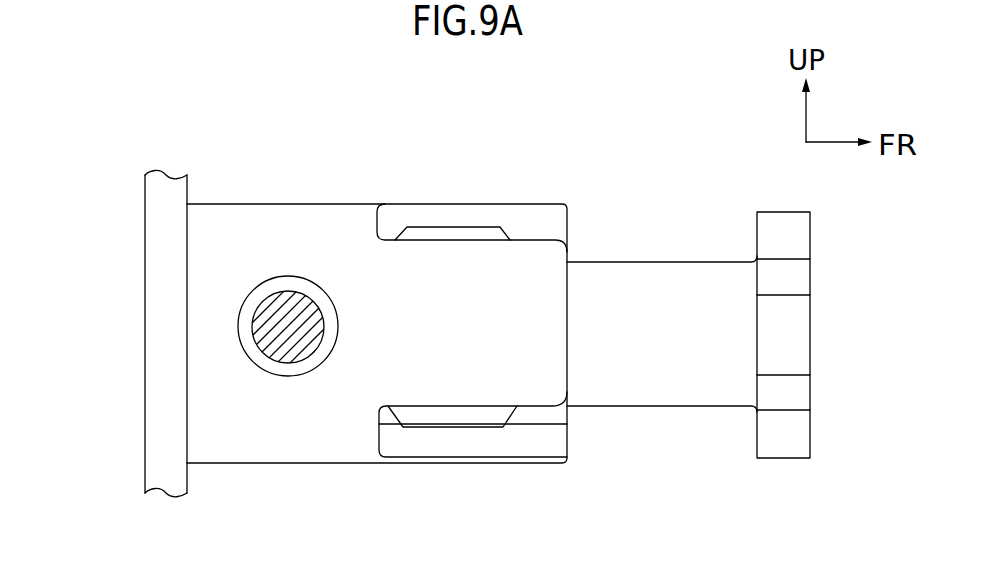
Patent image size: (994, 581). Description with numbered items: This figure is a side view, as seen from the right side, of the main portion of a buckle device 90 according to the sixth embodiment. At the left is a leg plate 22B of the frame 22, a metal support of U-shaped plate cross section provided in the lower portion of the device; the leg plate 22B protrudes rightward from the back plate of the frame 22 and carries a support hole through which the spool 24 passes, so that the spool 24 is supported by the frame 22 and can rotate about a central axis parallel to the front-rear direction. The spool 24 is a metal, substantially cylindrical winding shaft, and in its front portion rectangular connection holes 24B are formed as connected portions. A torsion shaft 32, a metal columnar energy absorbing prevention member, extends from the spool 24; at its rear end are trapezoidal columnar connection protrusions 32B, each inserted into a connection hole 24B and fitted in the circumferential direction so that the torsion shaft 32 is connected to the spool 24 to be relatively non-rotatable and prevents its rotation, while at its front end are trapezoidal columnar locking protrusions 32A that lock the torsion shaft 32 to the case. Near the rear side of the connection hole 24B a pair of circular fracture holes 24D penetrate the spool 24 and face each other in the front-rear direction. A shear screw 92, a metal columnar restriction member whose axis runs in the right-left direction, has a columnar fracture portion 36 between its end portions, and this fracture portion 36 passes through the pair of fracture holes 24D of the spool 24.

The buckle device 90 is at (220, 132).
The frame 22 is at (109, 328).
The leg plate 22B is at (160, 213).
The spool 24 is at (287, 204).
The connection hole 24B is at (423, 226).
The fracture hole 24D is at (335, 240).
The torsion shaft 32 is at (655, 262).
The locking protrusion 32A is at (778, 214).
The connection protrusion 32B is at (476, 225).
The fracture portion 36 is at (277, 361).
The shear screw 92 is at (293, 360).